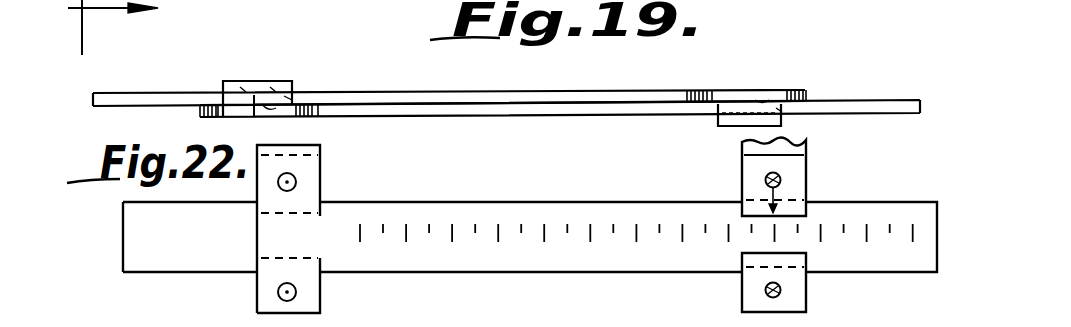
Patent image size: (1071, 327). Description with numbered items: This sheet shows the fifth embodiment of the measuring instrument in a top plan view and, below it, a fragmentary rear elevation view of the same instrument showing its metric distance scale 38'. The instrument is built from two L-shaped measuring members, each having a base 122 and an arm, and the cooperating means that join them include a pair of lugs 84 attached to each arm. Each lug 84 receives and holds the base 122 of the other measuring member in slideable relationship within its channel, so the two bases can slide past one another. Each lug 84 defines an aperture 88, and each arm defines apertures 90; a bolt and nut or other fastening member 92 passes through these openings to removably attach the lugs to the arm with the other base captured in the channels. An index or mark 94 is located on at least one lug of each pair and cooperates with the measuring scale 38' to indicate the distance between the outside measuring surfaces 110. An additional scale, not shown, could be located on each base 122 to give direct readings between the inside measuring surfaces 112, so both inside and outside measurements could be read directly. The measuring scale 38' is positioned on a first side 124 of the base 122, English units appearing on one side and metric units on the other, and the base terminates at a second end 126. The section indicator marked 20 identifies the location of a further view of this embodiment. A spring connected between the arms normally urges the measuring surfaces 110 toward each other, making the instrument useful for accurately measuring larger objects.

In FIG. 19, the section line arrow for FIG. 20 is at (140, 27).
In FIG. 22, the measuring scale 38' is at (530, 262).
In FIG. 19, the lug 84 is at (245, 80).
In FIG. 22, the lug 84 is at (321, 212).
In FIG. 19, the aperture 88 is at (294, 101).
In FIG. 19, the aperture 90 is at (270, 108).
In FIG. 22, the fastening member 92 is at (783, 179).
In FIG. 22, the index or mark 94 is at (779, 196).
In FIG. 19, the outside measuring surface 110 is at (323, 112).
In FIG. 19, the inside measuring surface 112 is at (200, 111).
In FIG. 19, the base 122 is at (520, 78).
In FIG. 19, the first side 124 is at (624, 83).
In FIG. 22, the second end 126 is at (142, 258).